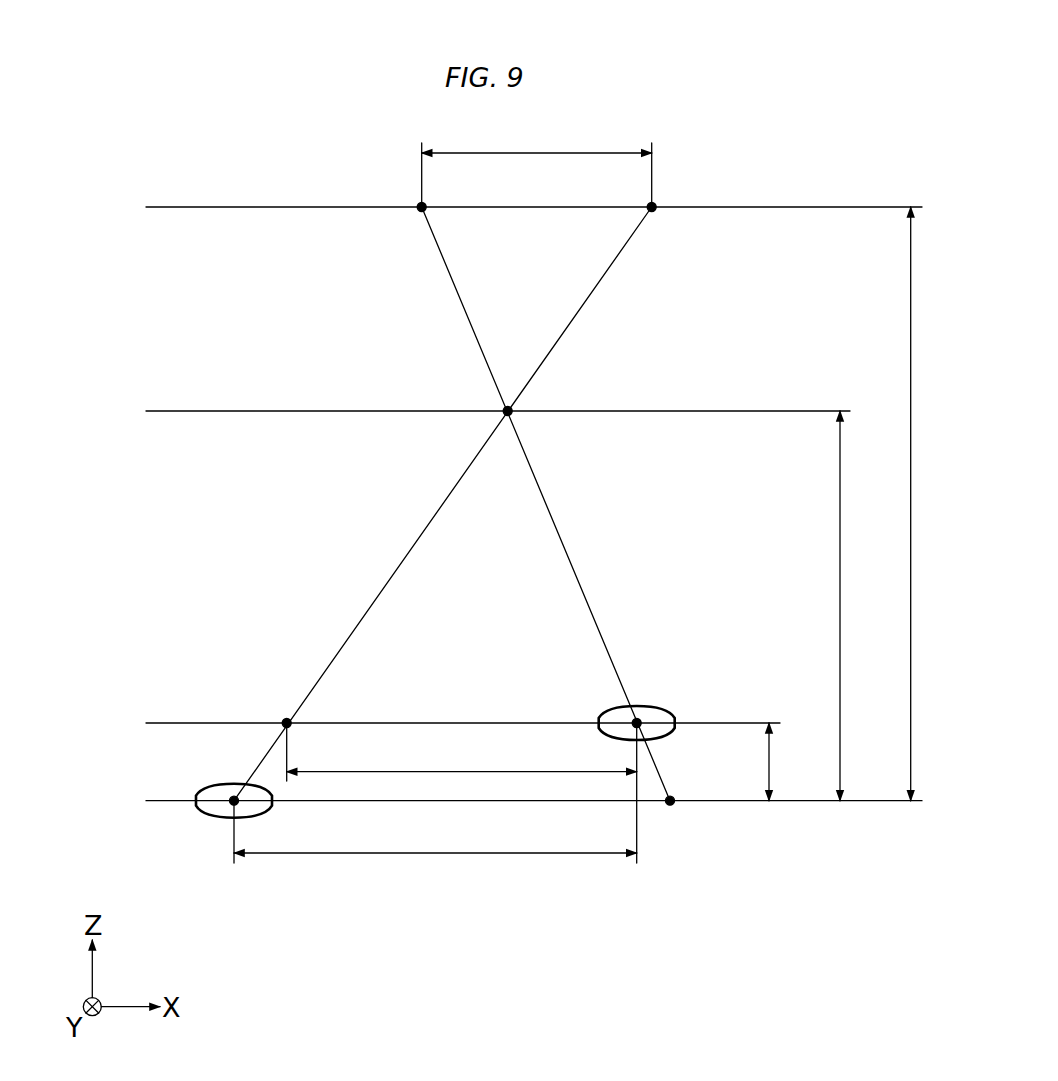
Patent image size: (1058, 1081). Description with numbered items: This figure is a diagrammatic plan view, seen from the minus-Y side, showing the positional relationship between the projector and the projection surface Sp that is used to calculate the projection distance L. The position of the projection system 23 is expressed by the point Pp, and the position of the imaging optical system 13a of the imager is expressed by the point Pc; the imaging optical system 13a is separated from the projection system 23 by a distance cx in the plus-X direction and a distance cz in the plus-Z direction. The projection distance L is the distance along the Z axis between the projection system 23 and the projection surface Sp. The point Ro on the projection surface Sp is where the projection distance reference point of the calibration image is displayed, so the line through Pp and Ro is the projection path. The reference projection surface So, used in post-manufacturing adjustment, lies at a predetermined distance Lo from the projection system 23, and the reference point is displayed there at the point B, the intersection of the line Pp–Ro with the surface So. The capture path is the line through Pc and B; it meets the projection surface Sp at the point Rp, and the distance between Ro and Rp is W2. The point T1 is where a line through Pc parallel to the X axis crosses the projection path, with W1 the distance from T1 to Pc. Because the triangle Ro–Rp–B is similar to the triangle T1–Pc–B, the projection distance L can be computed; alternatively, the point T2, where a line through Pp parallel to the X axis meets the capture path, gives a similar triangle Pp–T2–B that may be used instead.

The imaging optical system 13a is at (613, 712).
The projection system 23 is at (205, 814).
The projection surface Sp is at (172, 208).
The reference projection surface So is at (172, 412).
The point Rp is at (405, 222).
The point Ro is at (667, 222).
The point B is at (522, 426).
The point T1 is at (271, 707).
The point T2 is at (671, 817).
The point Pp is at (234, 798).
The point Pc is at (639, 709).
The distance W1 is at (462, 793).
The distance W2 is at (537, 165).
The distance cx is at (435, 832).
The distance cz is at (787, 762).
The projection distance L is at (921, 504).
The predetermined distance Lo is at (858, 606).